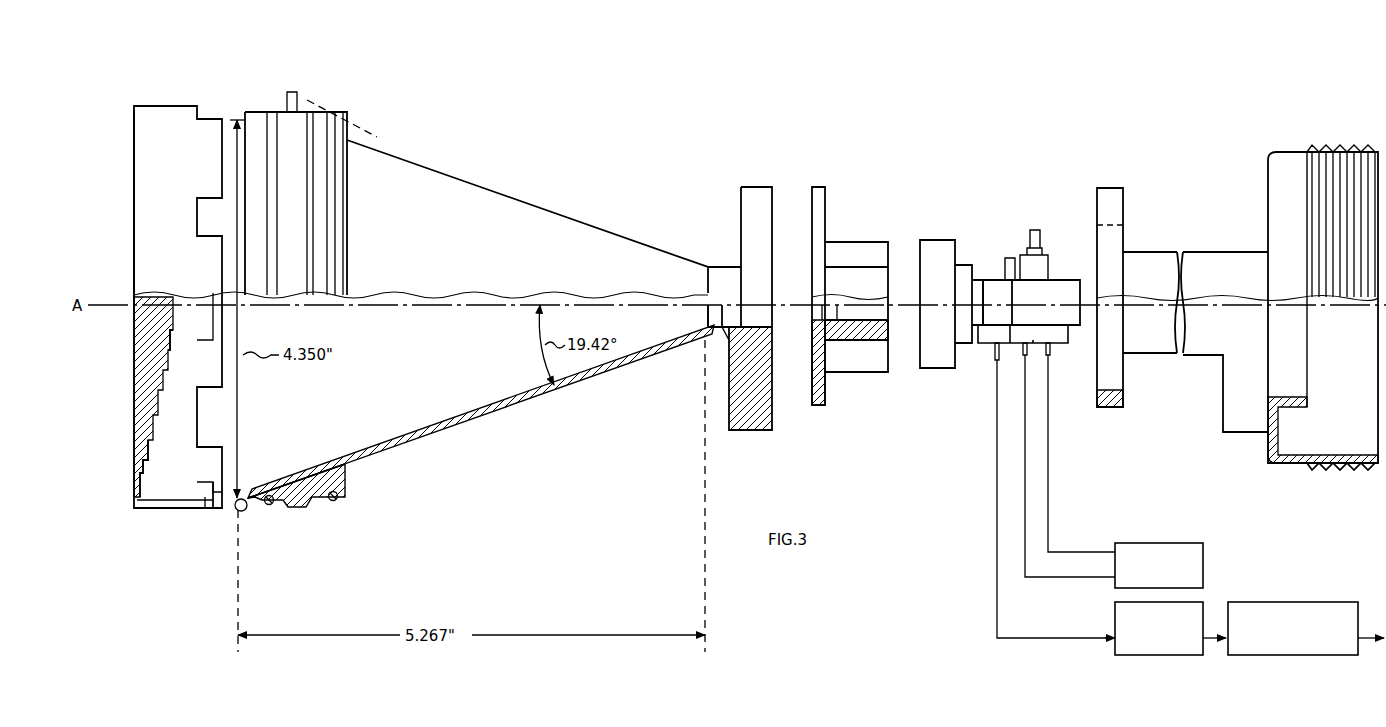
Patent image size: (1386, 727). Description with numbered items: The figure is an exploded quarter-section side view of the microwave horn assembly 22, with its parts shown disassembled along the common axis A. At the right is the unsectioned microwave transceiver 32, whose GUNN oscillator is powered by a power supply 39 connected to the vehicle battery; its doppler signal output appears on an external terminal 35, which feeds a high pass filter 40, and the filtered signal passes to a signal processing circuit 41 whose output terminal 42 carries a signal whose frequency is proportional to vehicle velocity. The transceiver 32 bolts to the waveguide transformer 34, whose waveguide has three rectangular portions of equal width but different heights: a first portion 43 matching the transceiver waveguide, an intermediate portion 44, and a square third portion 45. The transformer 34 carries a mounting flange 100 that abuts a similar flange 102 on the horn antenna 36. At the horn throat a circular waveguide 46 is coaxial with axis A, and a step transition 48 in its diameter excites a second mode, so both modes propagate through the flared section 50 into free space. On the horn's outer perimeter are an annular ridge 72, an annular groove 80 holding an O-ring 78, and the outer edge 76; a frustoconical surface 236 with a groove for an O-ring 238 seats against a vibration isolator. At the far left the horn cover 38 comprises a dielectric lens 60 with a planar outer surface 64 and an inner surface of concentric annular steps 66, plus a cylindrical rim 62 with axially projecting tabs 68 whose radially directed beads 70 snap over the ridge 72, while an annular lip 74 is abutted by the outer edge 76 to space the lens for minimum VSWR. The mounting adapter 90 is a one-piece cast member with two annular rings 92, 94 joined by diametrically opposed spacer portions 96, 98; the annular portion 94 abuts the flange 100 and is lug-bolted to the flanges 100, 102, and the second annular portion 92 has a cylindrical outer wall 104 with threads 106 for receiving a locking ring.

The microwave horn assembly 22 is at (950, 60).
The microwave transceiver 32 is at (988, 268).
The waveguide transformer 34 is at (861, 230).
The external terminal 35 is at (990, 356).
The horn antenna 36 is at (565, 208).
The horn cover 38 is at (168, 102).
The power supply 39 is at (1204, 560).
The high pass filter 40 is at (1168, 636).
The signal processing circuit 41 is at (1274, 638).
The output terminal 42 is at (1364, 642).
The first rectangular cross section portion 43 is at (876, 322).
The intermediate portion 44 is at (832, 332).
The third transformer portion 45 is at (812, 330).
The circular waveguide 46 is at (715, 345).
The step transition 48 is at (718, 335).
The flared section 50 is at (458, 411).
The dielectric lens 60 is at (150, 336).
The cylindrical rim 62 is at (157, 512).
The planar outer surface 64 is at (134, 170).
The concentric annular steps 66 is at (170, 348).
The axially projecting tabs 68 is at (222, 510).
The radially directed beads 70 is at (214, 488).
The annular ridge 72 is at (300, 508).
The annular lip 74 is at (162, 498).
The outer edge 76 is at (244, 498).
The O-ring 78 is at (266, 504).
The annular groove 80 is at (276, 480).
The mounting adapter 90 is at (1197, 462).
The second annular portion 92 is at (1355, 410).
The annular portion 94 is at (1108, 409).
The spacer portion 96 is at (1157, 267).
The spacer portion 98 is at (1152, 344).
The mounting flange 100 is at (822, 186).
The flange 102 is at (752, 186).
The cylindrical outer wall 104 is at (1282, 465).
The threads 106 is at (1336, 472).
The frustoconical surface 236 is at (339, 106).
The O-ring 238 is at (334, 500).